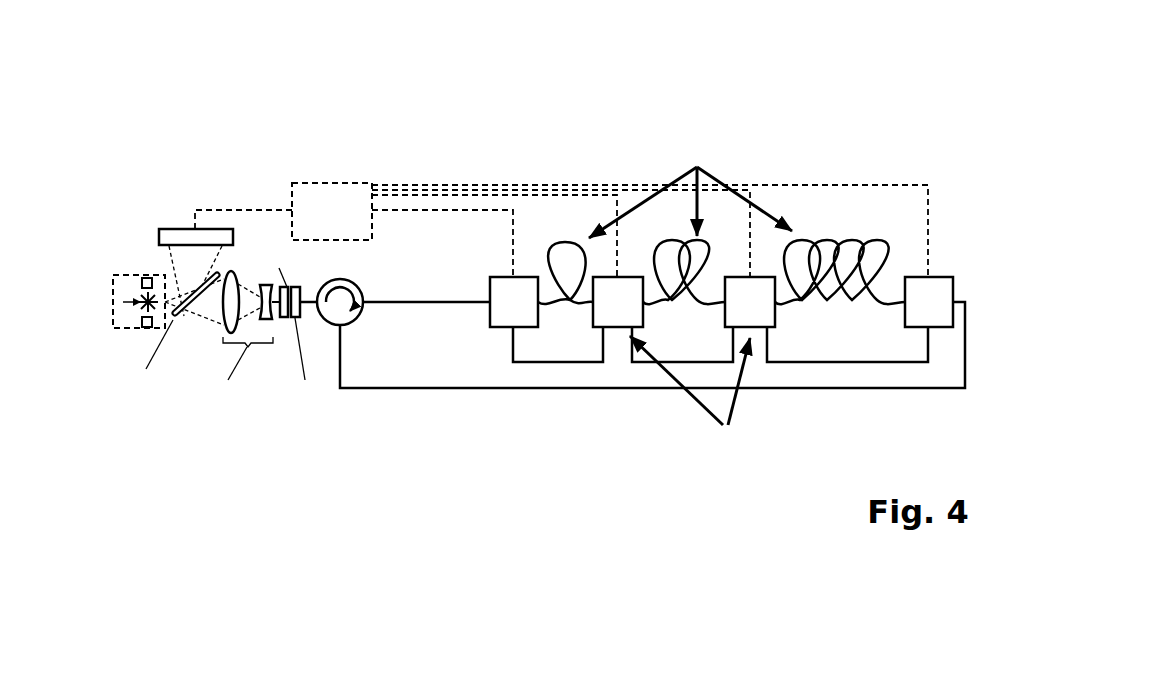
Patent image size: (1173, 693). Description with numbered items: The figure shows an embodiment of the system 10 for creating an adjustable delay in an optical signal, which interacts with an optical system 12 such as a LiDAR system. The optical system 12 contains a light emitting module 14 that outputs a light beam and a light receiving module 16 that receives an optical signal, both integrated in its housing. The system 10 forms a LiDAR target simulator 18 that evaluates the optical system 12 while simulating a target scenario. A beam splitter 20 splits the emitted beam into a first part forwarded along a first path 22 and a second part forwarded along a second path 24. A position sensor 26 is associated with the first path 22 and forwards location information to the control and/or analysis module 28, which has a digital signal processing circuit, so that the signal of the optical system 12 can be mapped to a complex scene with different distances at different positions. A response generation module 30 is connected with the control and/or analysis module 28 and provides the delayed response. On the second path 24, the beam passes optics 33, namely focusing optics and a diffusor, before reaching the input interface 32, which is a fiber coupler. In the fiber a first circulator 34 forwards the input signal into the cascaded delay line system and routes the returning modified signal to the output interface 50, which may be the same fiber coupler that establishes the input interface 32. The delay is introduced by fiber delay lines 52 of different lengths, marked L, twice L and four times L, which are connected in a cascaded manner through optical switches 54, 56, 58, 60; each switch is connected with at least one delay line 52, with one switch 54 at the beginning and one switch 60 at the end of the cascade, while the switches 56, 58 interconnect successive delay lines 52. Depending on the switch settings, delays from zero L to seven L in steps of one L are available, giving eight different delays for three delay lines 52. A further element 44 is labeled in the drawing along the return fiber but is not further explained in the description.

The system 10 is at (798, 76).
The optical system 12 is at (120, 276).
The light emitting module 14 is at (142, 283).
The light receiving module 16 is at (142, 322).
The LiDAR target simulator 18 is at (641, 109).
The beam splitter 20 is at (178, 320).
The first path 22 is at (238, 260).
The second path 24 is at (215, 345).
The position sensor 26 is at (193, 228).
The control and/or analysis module 28 is at (328, 182).
The response generation module 30 is at (883, 136).
The input interface 32 is at (318, 276).
The optics 33 is at (253, 347).
The first circulator 34 is at (364, 296).
The return optical fiber 44 is at (853, 390).
The output interface 50 is at (310, 315).
The fiber delay lines 52 is at (556, 242).
The optical switch 54 is at (502, 328).
The optical switch 56 is at (617, 328).
The optical switch 58 is at (757, 328).
The optical switch 60 is at (938, 277).